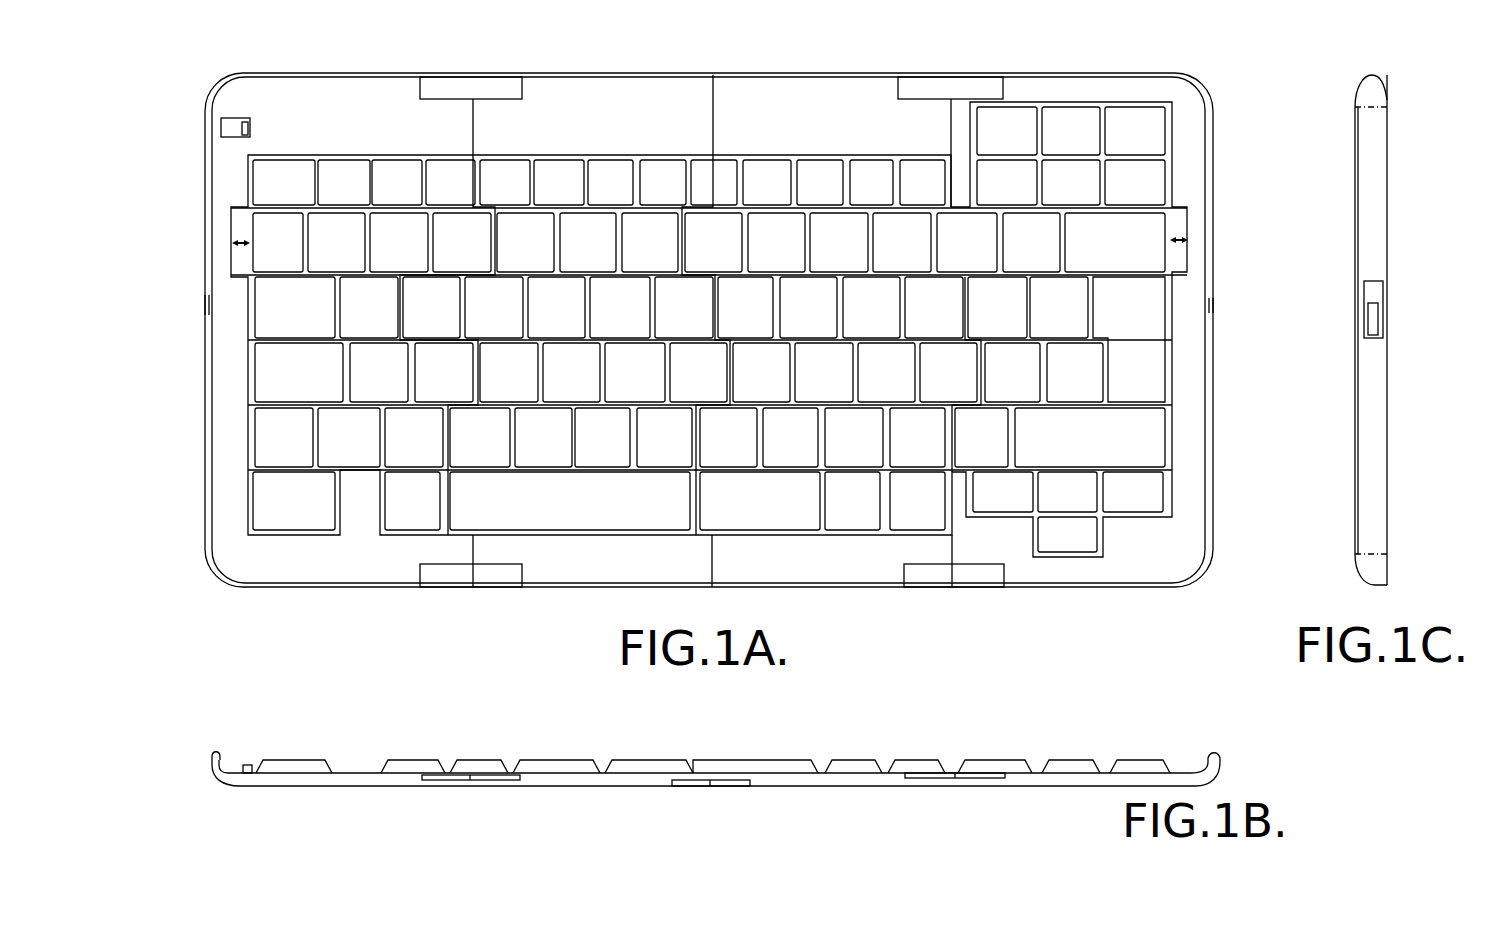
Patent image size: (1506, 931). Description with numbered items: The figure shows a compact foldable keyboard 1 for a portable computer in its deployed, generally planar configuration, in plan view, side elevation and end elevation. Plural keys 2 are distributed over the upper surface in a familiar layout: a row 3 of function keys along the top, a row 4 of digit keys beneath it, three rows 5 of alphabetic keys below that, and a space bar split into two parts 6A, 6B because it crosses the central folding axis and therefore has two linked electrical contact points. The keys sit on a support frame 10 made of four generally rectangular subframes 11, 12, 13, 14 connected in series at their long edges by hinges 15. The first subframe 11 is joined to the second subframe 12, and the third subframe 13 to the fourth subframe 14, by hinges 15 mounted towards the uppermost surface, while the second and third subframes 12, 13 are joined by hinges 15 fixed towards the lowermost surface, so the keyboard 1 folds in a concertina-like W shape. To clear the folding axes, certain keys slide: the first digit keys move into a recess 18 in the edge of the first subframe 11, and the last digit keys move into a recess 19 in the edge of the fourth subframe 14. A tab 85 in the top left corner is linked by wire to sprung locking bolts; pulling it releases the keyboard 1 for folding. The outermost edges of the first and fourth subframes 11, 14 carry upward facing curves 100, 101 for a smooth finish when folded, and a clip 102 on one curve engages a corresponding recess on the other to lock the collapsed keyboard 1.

In FIG. 1A, the keyboard 1 is at (1084, 48).
In FIG. 1B, the keyboard 1 is at (1148, 730).
In FIG. 1C, the keyboard 1 is at (1343, 335).
In FIG. 1A, the keys 2 is at (272, 311).
In FIG. 1B, the keys 2 is at (478, 768).
In FIG. 1A, the row of function keys 3 is at (236, 178).
In FIG. 1A, the row of digit keys 4 is at (237, 216).
In FIG. 1A, the rows of alphabetic keys 5 is at (372, 313).
In FIG. 1A, the space bar part 6A is at (610, 512).
In FIG. 1A, the space bar part 6B is at (765, 513).
In FIG. 1B, the support frame 10 is at (250, 788).
In FIG. 1A, the first subframe 11 is at (331, 98).
In FIG. 1B, the first subframe 11 is at (338, 778).
In FIG. 1A, the second subframe 12 is at (587, 93).
In FIG. 1B, the second subframe 12 is at (572, 778).
In FIG. 1A, the third subframe 13 is at (793, 95).
In FIG. 1B, the third subframe 13 is at (853, 778).
In FIG. 1A, the fourth subframe 14 is at (1138, 88).
In FIG. 1B, the fourth subframe 14 is at (1013, 778).
In FIG. 1A, the hinges 15 is at (451, 89).
In FIG. 1B, the hinges 15 is at (925, 771).
In FIG. 1A, the recess 18 is at (234, 262).
In FIG. 1A, the recess 19 is at (1187, 265).
In FIG. 1A, the tab 85 is at (243, 120).
In FIG. 1B, the upward facing curve 100 is at (213, 760).
In FIG. 1B, the upward facing curve 101 is at (1222, 762).
In FIG. 1A, the clip 102 is at (206, 307).
In FIG. 1B, the clip 102 is at (220, 753).
In FIG. 1C, the clip 102 is at (1408, 302).